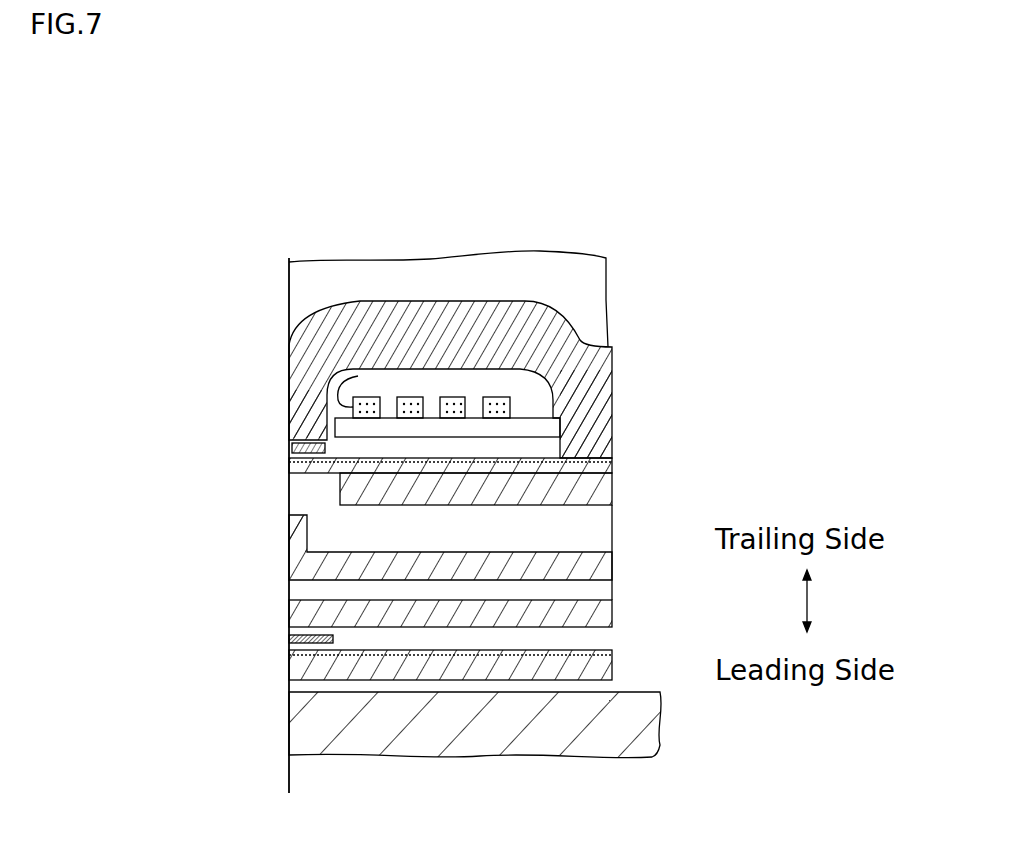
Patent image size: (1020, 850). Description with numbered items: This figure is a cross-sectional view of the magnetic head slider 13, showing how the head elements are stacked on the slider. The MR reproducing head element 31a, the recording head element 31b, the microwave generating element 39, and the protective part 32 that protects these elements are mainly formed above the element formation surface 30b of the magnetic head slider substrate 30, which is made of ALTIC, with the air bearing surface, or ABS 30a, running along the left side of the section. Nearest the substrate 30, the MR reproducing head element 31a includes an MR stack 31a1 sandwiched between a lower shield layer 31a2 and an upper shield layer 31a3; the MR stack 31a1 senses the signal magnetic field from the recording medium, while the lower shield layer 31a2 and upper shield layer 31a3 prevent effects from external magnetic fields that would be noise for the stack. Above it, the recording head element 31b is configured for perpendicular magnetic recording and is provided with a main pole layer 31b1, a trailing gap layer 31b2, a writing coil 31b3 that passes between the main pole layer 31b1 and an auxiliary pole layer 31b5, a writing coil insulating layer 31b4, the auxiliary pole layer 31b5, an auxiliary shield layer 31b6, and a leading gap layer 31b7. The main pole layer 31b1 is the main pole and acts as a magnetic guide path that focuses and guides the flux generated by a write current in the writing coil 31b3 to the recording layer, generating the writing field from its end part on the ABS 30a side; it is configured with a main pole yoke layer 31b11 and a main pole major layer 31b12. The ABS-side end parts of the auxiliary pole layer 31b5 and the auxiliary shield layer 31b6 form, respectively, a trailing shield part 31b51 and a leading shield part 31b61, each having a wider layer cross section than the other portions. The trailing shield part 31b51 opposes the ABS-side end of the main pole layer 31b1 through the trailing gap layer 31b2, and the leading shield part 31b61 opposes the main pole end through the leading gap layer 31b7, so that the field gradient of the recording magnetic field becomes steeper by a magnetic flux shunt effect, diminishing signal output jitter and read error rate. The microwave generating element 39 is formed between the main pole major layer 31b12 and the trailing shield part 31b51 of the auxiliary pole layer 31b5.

The magnetic head 13 is at (604, 230).
The protective part 32 is at (440, 265).
The microwave generating element 39 is at (327, 450).
The magnetic head slider substrate 30 is at (637, 718).
The ABS 30a is at (289, 737).
The element formation surface 30b is at (380, 690).
The MR reproducing head element 31a is at (174, 592).
The MR stack 31a1 is at (293, 640).
The lower shield layer 31a2 is at (293, 668).
The upper shield layer 31a3 is at (293, 611).
The recording head element 31b is at (96, 295).
The main pole layer 31b1 is at (176, 440).
The main pole yoke layer 31b11 is at (340, 482).
The main pole major layer 31b12 is at (289, 464).
The trailing gap layer 31b2 is at (347, 434).
The writing coil 31b3 is at (413, 405).
The writing coil insulating layer 31b4 is at (300, 306).
The auxiliary pole layer 31b5 is at (330, 362).
The trailing shield part 31b51 is at (289, 405).
The auxiliary shield layer 31b6 is at (293, 568).
The leading shield part 31b61 is at (293, 532).
The leading gap layer 31b7 is at (293, 497).